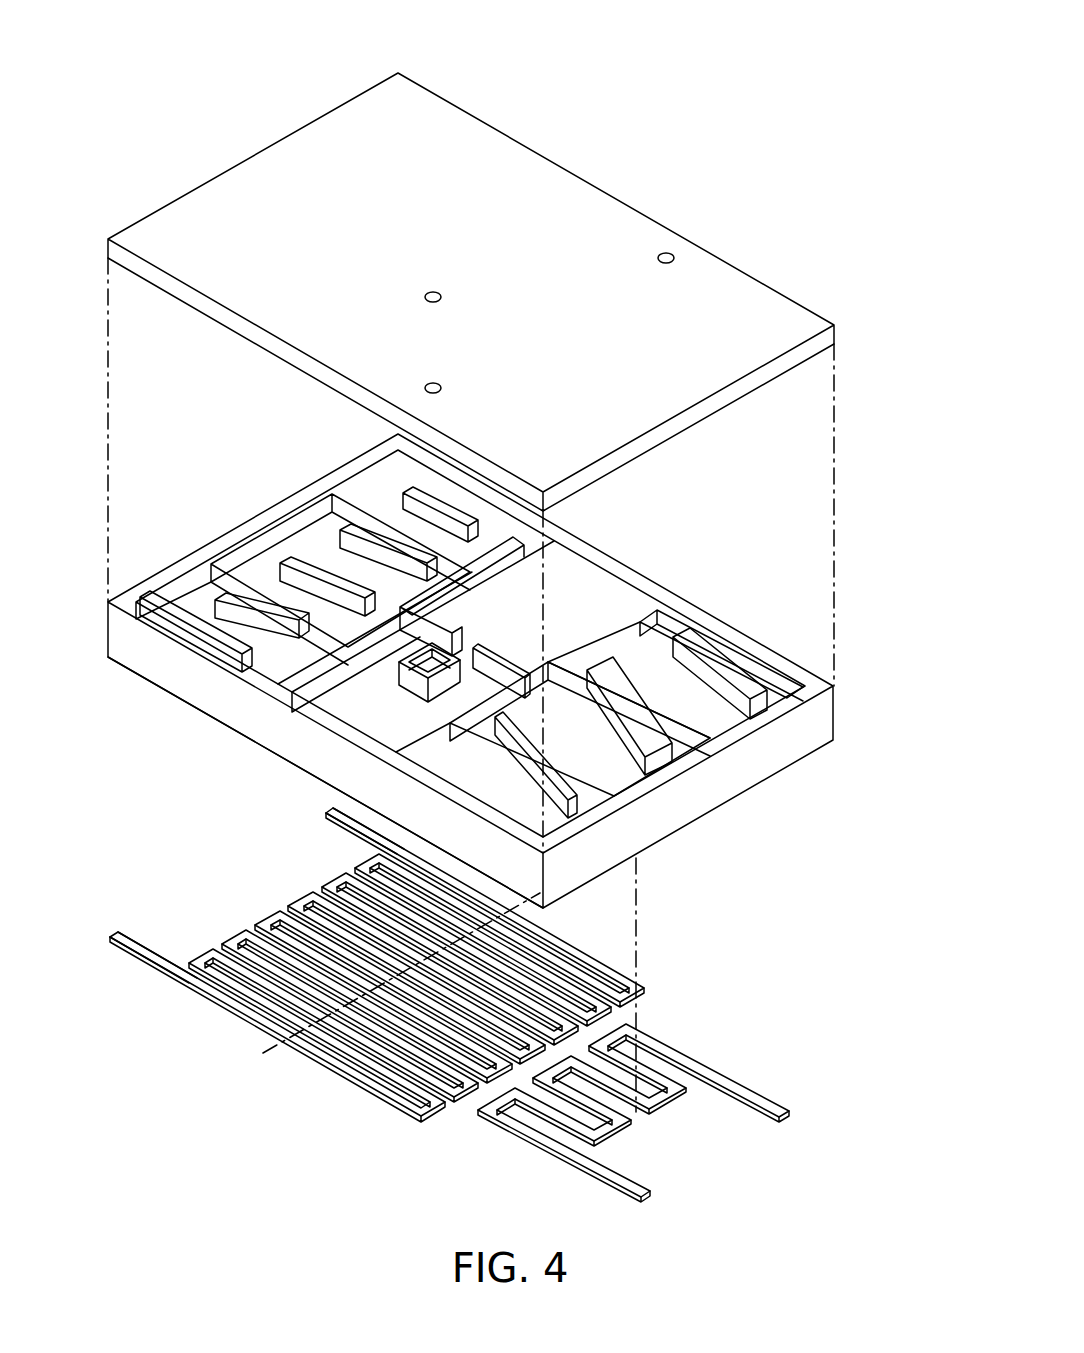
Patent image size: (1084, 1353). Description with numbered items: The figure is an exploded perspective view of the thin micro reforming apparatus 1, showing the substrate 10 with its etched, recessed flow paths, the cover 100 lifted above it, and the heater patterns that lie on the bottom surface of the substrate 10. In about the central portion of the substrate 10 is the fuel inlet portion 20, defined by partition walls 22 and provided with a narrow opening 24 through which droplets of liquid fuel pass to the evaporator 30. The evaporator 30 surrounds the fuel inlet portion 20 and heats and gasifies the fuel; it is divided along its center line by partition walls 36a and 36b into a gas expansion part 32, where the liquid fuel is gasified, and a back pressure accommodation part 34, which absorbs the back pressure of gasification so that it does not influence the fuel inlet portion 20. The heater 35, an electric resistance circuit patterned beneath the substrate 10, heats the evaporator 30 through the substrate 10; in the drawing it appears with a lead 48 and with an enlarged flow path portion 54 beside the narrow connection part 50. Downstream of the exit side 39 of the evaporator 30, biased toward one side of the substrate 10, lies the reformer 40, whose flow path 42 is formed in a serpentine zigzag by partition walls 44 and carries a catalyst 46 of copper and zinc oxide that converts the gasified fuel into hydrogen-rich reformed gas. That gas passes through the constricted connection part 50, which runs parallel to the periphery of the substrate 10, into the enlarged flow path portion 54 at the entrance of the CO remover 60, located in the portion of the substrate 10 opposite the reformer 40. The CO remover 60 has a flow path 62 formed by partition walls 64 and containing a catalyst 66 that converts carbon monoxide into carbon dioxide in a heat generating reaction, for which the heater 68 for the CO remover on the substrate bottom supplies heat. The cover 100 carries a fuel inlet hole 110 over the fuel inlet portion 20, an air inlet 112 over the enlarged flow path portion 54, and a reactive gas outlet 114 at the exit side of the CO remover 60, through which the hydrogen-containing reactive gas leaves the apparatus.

The thin micro reforming apparatus 1 is at (659, 83).
The substrate 10 is at (790, 758).
The fuel inlet portion 20 is at (377, 672).
The partition walls 22 is at (420, 684).
The narrow opening 24 is at (445, 692).
The evaporator 30 is at (597, 632).
The gas expansion part 32 is at (601, 604).
The back pressure accommodation part 34 is at (408, 660).
The heater 35 is at (311, 1081).
The partition wall 36a is at (455, 625).
The partition wall 36b is at (495, 672).
The exit side 39 is at (515, 622).
The reformer 40 is at (201, 481).
The flow path 42 is at (337, 504).
The partition walls 44 is at (338, 530).
The catalyst 46 is at (262, 562).
The heater lead 48 is at (212, 1012).
The connection part 50 is at (318, 798).
The enlarged flow path portion 54 is at (332, 818).
The CO remover 60 is at (708, 672).
The flow path 62 is at (807, 673).
The partition walls 64 is at (553, 797).
The catalyst 66 is at (725, 703).
The heater for CO remover 68 is at (540, 1166).
The cover 100 is at (202, 151).
The fuel inlet hole 110 is at (436, 292).
The air inlet 112 is at (430, 384).
The reactive gas outlet 114 is at (669, 254).